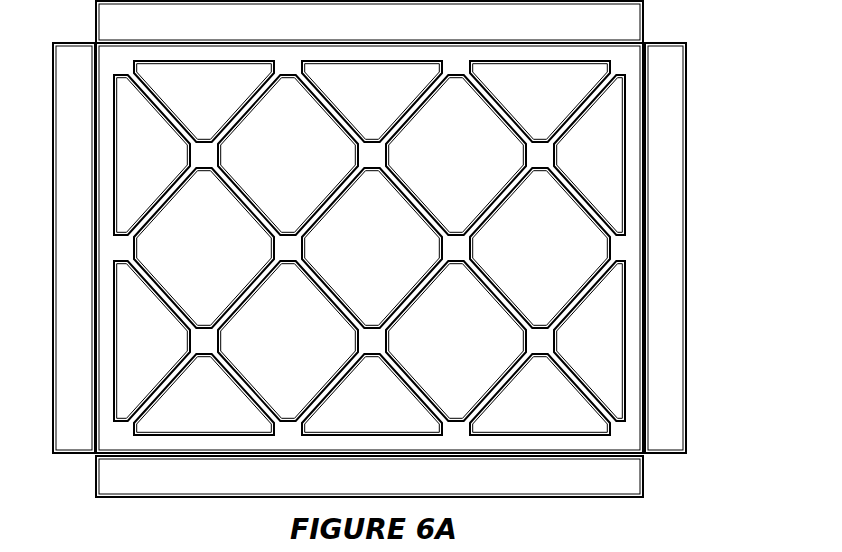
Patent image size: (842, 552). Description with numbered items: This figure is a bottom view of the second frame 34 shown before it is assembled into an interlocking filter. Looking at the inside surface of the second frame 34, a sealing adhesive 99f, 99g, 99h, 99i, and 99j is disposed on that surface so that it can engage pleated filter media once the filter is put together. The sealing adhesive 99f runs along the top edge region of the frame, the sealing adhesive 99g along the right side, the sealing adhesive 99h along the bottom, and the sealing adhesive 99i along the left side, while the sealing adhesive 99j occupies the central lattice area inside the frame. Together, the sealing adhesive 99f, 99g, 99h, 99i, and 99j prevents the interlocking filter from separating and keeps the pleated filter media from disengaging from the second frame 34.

The second frame 34 is at (740, 37).
The sealing adhesive 99f is at (96, 24).
The sealing adhesive 99g is at (686, 248).
The sealing adhesive 99h is at (643, 476).
The sealing adhesive 99i is at (53, 249).
The sealing adhesive 99j is at (301, 247).